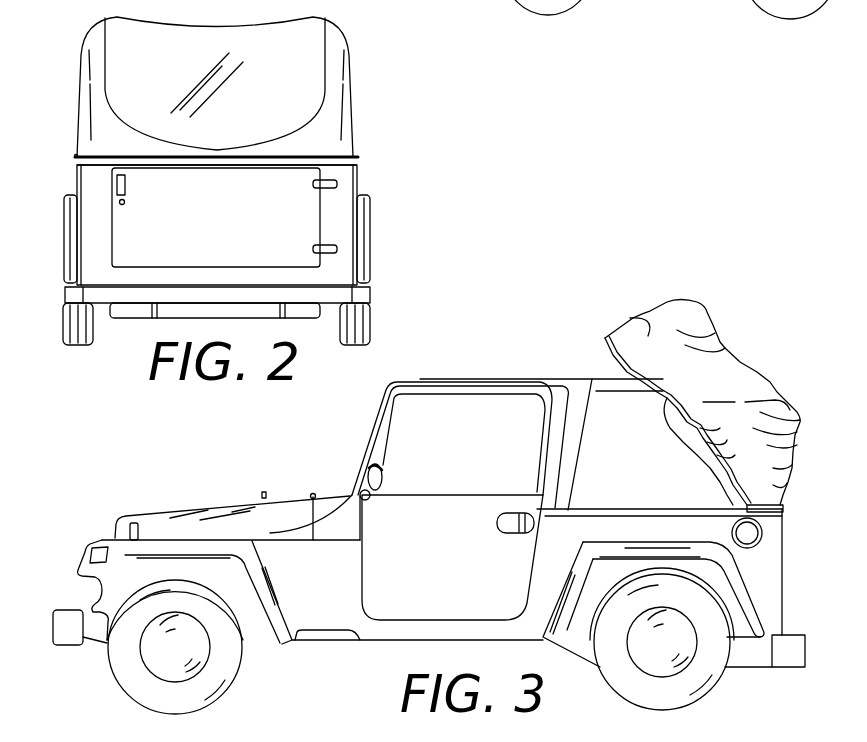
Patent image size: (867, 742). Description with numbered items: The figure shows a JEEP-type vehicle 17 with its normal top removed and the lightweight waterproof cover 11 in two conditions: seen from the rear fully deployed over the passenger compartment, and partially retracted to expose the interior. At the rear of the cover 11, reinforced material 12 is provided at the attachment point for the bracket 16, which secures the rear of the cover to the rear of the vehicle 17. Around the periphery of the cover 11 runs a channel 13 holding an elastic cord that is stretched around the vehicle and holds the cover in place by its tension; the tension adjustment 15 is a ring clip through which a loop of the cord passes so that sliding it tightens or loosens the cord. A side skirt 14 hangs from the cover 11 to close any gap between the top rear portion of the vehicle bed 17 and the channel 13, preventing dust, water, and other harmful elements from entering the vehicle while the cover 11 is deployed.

In FIG. 2, the cover 11 is at (348, 90).
In FIG. 3, the cover 11 is at (702, 403).
In FIG. 2, the reinforced material 12 is at (300, 162).
In FIG. 3, the reinforced material 12 is at (786, 497).
In FIG. 3, the channel 13 is at (625, 357).
In FIG. 3, the side skirt 14 is at (710, 475).
In FIG. 2, the tension adjustment 15 is at (75, 156).
In FIG. 2, the bracket 16 is at (100, 167).
In FIG. 3, the bracket 16 is at (785, 510).
In FIG. 2, the vehicle 17 is at (237, 240).
In FIG. 3, the vehicle 17 is at (770, 577).